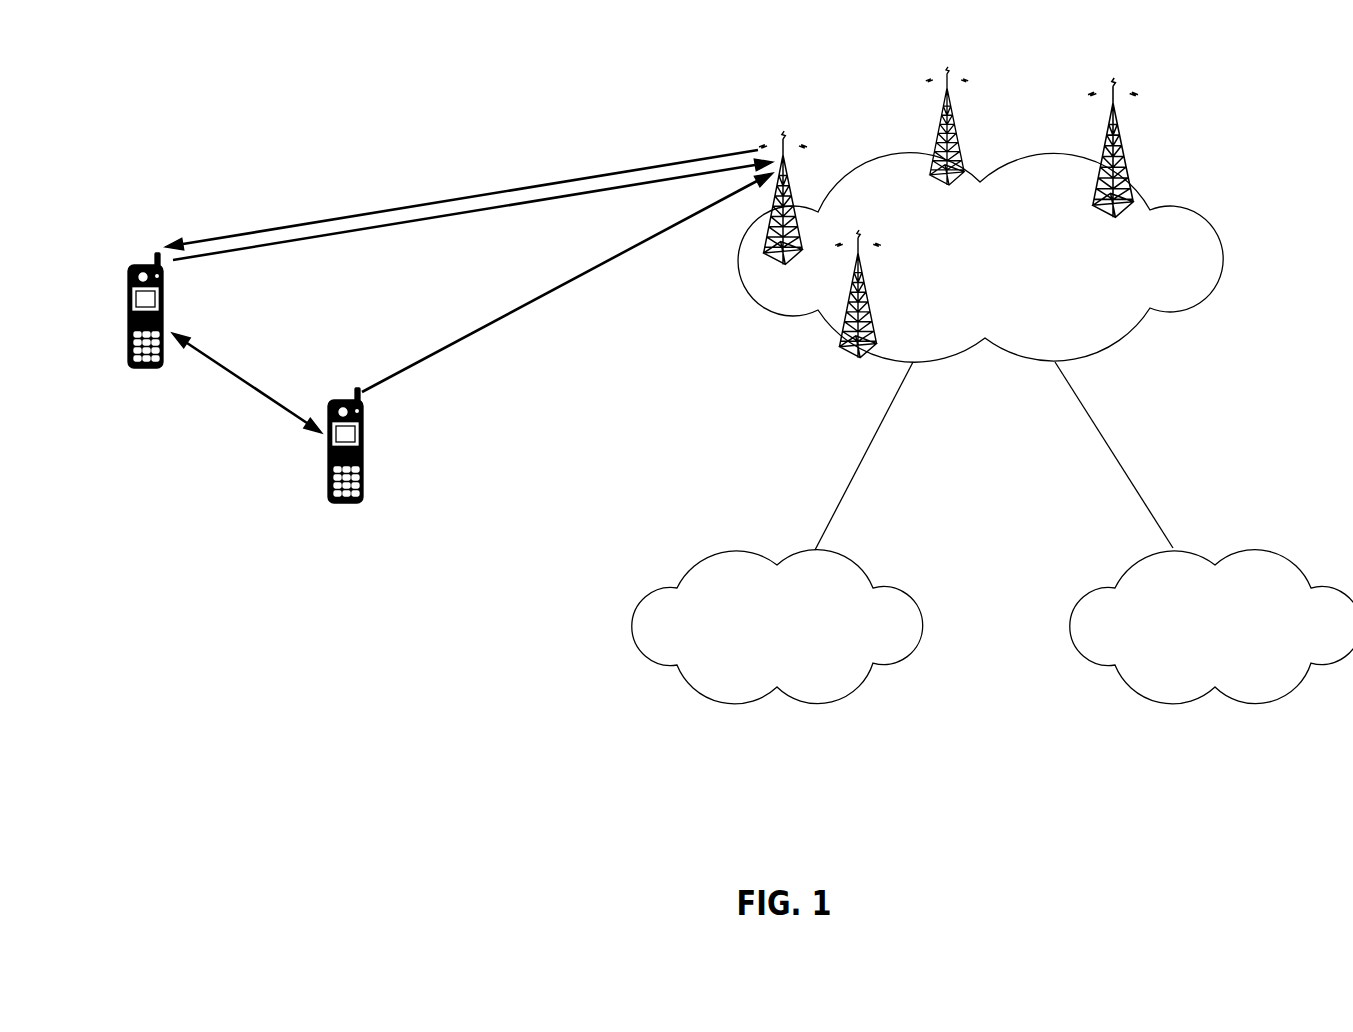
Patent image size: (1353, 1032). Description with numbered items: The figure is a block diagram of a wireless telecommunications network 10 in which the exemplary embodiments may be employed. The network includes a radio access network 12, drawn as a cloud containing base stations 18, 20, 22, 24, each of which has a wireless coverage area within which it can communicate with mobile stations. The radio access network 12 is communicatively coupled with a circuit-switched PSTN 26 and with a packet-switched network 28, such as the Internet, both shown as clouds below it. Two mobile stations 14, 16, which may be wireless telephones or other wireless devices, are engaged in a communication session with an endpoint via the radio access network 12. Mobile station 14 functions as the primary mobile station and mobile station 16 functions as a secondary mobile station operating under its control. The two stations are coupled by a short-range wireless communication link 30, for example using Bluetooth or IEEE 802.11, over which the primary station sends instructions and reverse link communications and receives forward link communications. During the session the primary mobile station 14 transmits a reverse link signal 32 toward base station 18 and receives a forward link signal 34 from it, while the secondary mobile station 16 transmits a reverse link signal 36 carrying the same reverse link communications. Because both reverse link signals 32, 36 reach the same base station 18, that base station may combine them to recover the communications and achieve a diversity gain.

The wireless telecommunications network 10 is at (173, 768).
The radio access network 12 is at (1027, 272).
The mobile station 14 is at (127, 332).
The mobile station 16 is at (327, 482).
The base station 18 is at (767, 226).
The base station 20 is at (847, 323).
The base station 22 is at (966, 171).
The base station 24 is at (1131, 186).
The PSTN 26 is at (825, 639).
The packet-switched network 28 is at (1273, 652).
The short-range wireless communication link 30 is at (247, 385).
The reverse link signal 32 is at (268, 247).
The forward link signal 34 is at (268, 228).
The reverse link signal 36 is at (560, 282).